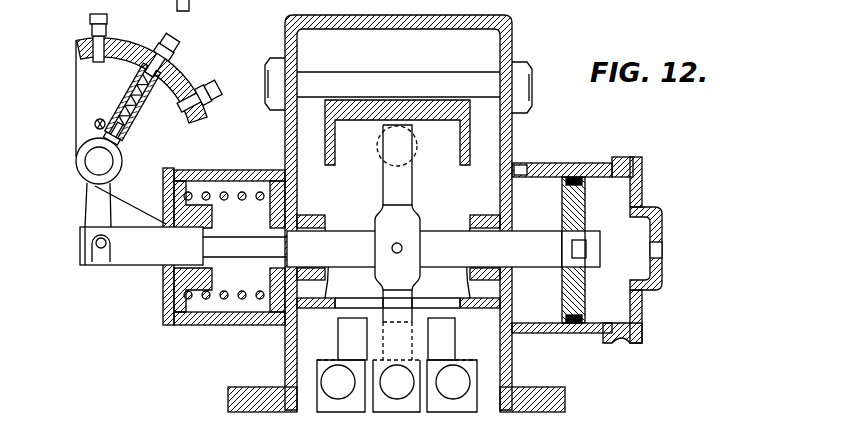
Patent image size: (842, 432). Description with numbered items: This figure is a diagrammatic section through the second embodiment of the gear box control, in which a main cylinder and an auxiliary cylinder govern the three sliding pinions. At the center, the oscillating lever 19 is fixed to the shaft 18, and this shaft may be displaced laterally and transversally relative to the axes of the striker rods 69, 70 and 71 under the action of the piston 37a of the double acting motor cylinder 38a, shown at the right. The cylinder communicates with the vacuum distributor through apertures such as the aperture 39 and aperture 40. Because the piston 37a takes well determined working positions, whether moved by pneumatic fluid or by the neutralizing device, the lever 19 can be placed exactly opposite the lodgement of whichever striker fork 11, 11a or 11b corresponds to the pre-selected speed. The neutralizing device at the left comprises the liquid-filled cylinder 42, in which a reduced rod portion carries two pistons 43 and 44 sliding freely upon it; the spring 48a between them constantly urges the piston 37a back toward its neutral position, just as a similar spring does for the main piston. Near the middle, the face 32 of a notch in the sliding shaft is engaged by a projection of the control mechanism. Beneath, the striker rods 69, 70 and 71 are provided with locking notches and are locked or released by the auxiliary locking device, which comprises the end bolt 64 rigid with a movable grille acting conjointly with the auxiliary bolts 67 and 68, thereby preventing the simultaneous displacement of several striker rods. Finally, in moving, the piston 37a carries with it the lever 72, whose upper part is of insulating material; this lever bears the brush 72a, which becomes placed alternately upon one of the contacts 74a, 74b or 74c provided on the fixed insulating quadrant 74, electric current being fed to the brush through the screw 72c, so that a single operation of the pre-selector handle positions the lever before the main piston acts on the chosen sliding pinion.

The striker fork 11 is at (272, 392).
The striker fork 11a is at (385, 400).
The striker fork 11b is at (513, 386).
The shaft 18 is at (436, 245).
The lever 19 is at (400, 198).
The face of notch 32 is at (427, 112).
The piston 37a is at (580, 198).
The double acting motor cylinder 38a is at (574, 165).
The aperture 39 is at (660, 251).
The aperture 40 is at (520, 170).
The cylinder 42 is at (256, 316).
The piston 43 is at (282, 208).
The piston 44 is at (163, 292).
The spring 48a is at (222, 306).
The end bolt 64 is at (222, 334).
The auxiliary bolt 67 is at (287, 392).
The auxiliary bolt 68 is at (512, 392).
The striker rod 69 is at (301, 396).
The striker rod 70 is at (405, 396).
The striker rod 71 is at (498, 396).
The lever 72 is at (86, 203).
The brush 72a is at (141, 79).
The screw 72c is at (95, 124).
The quadrant 74 is at (126, 46).
The contact 74a is at (160, 63).
The contact 74b is at (205, 110).
The contact 74c is at (93, 56).